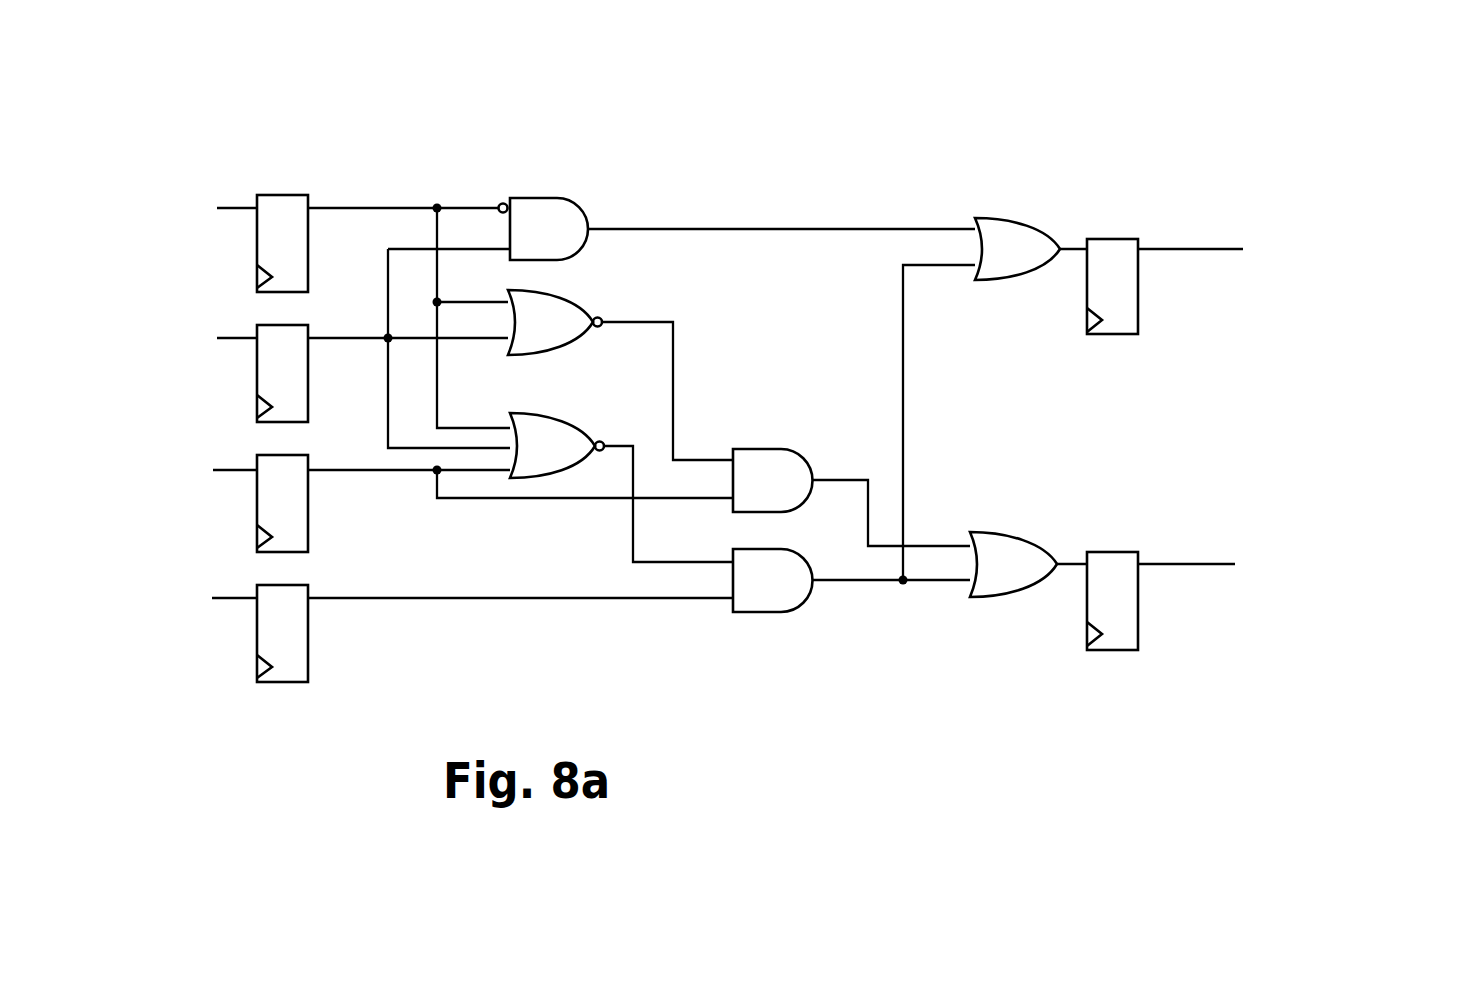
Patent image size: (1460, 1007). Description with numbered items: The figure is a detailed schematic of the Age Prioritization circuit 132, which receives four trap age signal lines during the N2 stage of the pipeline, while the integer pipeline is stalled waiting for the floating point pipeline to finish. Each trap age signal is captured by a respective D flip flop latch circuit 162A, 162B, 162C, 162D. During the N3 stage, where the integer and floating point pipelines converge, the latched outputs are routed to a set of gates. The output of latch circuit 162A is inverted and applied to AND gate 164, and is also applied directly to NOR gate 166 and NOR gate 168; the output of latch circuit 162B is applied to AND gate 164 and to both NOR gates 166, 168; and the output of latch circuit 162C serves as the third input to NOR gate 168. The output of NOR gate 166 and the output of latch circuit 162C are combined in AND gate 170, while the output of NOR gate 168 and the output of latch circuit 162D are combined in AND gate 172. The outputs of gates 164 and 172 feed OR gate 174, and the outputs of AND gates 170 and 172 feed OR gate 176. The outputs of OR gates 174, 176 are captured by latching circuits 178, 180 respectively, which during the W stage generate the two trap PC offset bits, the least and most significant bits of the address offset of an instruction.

The Age Prioritization circuit 132 is at (943, 98).
The latch circuit 162A is at (310, 244).
The latch circuit 162B is at (310, 372).
The latch circuit 162C is at (310, 497).
The latch circuit 162D is at (310, 623).
The AND gate 164 is at (540, 197).
The NOR gate 166 is at (541, 290).
The NOR gate 168 is at (540, 414).
The AND gate 170 is at (765, 449).
The AND gate 172 is at (765, 549).
The OR gate 174 is at (1007, 218).
The OR gate 176 is at (998, 532).
The latching circuit 178 is at (1110, 239).
The latching circuit 180 is at (1107, 552).